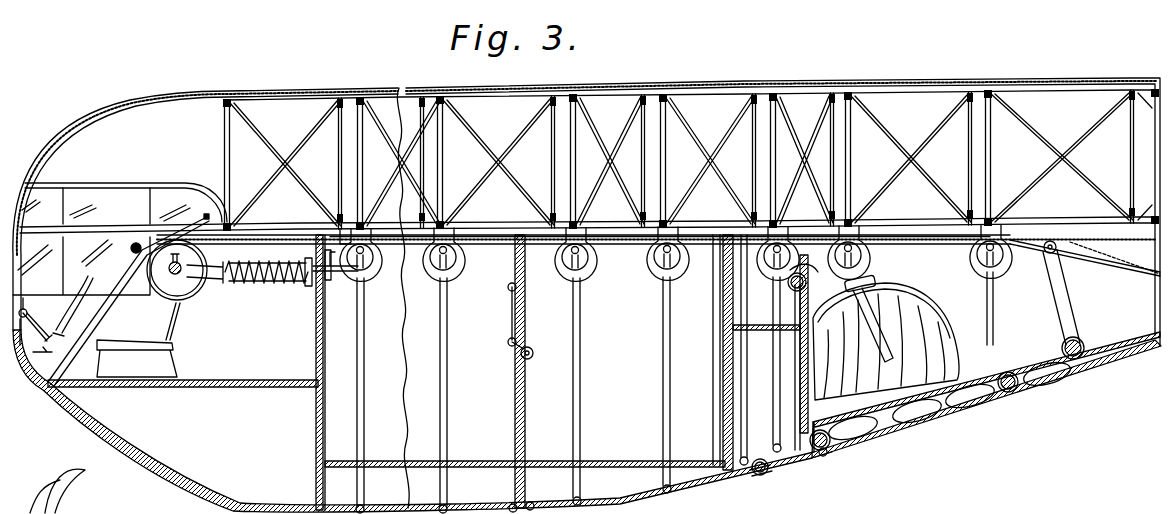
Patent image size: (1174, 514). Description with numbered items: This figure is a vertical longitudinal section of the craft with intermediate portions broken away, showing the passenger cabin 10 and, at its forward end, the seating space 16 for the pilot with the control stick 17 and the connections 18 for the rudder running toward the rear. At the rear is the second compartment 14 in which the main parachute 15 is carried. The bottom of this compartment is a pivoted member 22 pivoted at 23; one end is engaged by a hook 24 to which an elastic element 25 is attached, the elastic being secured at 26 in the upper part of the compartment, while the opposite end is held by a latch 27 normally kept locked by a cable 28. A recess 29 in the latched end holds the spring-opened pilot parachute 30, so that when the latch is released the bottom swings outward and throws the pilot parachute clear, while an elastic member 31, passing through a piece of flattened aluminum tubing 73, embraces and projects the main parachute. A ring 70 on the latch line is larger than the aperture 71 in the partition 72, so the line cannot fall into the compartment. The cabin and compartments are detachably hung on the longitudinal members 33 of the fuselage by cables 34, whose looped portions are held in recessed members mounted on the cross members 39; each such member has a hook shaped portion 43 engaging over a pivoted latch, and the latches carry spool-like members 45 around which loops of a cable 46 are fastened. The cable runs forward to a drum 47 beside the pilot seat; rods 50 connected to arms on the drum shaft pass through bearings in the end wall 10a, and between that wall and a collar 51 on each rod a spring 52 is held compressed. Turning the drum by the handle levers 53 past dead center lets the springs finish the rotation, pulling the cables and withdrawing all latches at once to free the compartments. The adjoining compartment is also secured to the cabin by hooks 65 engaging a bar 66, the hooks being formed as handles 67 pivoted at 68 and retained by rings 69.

The passenger cabin 10 is at (587, 295).
The end wall of the cabin compartment 10a is at (318, 335).
The second compartment 14 is at (1011, 308).
The main parachute 15 is at (933, 298).
The pilot seating space 16 is at (178, 337).
The control stick 17 is at (80, 295).
The rudder connections 18 is at (45, 300).
The pivoted member 22 is at (963, 403).
The pivot 23 is at (1023, 383).
The hook 24 is at (1083, 340).
The elastic element 25 is at (1071, 300).
The securing point of elastic element 26 is at (1047, 252).
The latch 27 is at (792, 468).
The cable 28 is at (795, 347).
The recess 29 is at (830, 447).
The pilot parachute 30 is at (833, 460).
The elastic member 31 is at (900, 283).
The longitudinal members of the fuselage 33 is at (722, 96).
The cables 34 is at (342, 181).
The cross members 39 is at (678, 272).
The hook shaped portion 43 is at (480, 214).
The spool-like members 45 is at (367, 228).
The cable 46 is at (910, 235).
The drum 47 is at (150, 296).
The rods 50 is at (332, 282).
The collar 51 is at (201, 280).
The spring 52 is at (268, 284).
The handle levers 53 is at (134, 243).
The hooks 65 is at (531, 350).
The bar 66 is at (530, 360).
The handles 67 is at (512, 312).
The pivot 68 is at (509, 343).
The rings 69 is at (510, 290).
The ring 70 is at (808, 276).
The aperture 71 is at (790, 323).
The partition 72 is at (791, 287).
The flattened aluminum tubing 73 is at (568, 374).